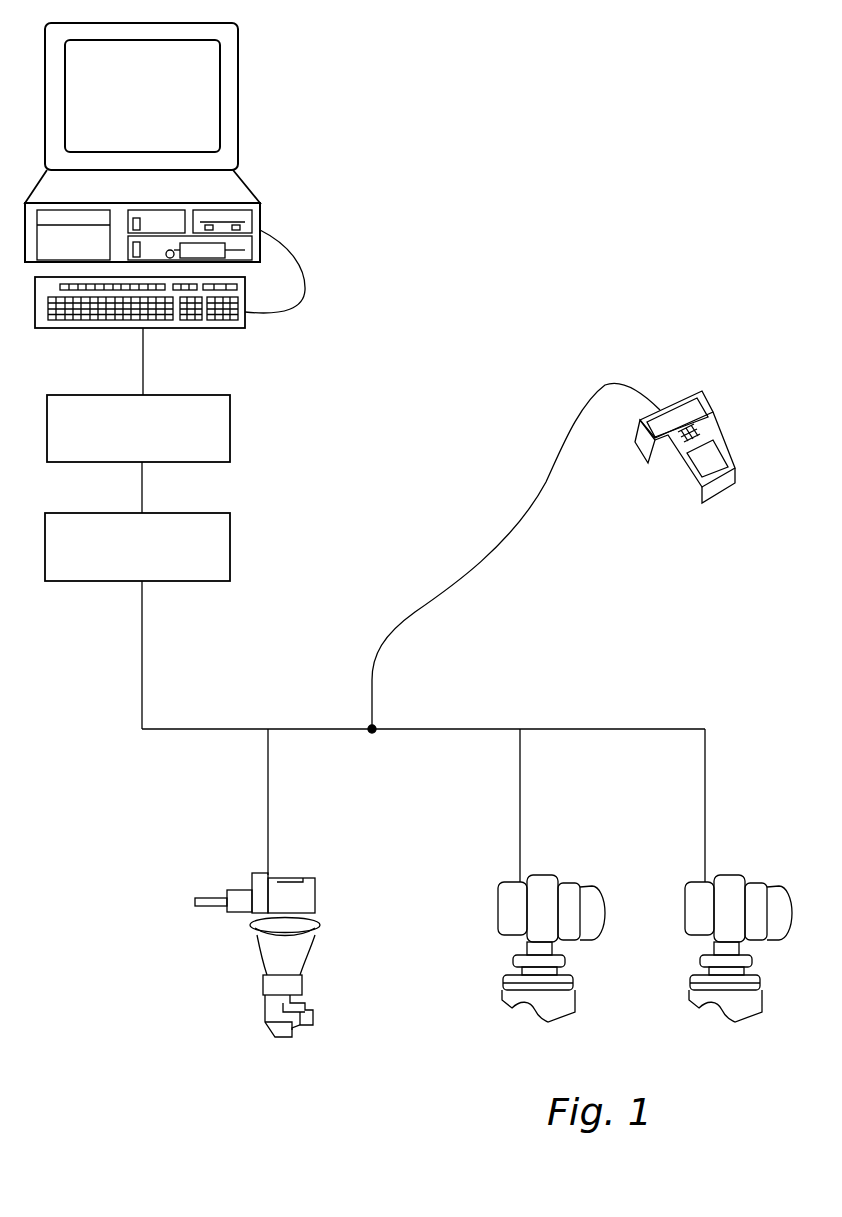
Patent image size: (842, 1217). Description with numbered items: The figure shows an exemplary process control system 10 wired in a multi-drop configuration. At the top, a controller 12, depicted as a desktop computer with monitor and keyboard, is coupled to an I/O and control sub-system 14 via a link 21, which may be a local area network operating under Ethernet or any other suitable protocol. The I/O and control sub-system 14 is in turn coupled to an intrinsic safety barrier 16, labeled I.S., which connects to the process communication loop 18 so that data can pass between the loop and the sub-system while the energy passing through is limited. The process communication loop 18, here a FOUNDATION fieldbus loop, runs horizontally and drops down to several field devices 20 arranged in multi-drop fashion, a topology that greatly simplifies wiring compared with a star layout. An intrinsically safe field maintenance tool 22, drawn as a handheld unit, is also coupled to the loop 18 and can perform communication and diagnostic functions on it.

The system 10 is at (426, 294).
The controller 12 is at (238, 70).
The I/O and control sub-system 14 is at (230, 412).
The intrinsic safety barrier 16 is at (230, 532).
The process communication loop 18 is at (440, 729).
The field devices 20 is at (207, 927).
The link 21 is at (143, 353).
The intrinsically safe field maintenance tool 22 is at (712, 398).